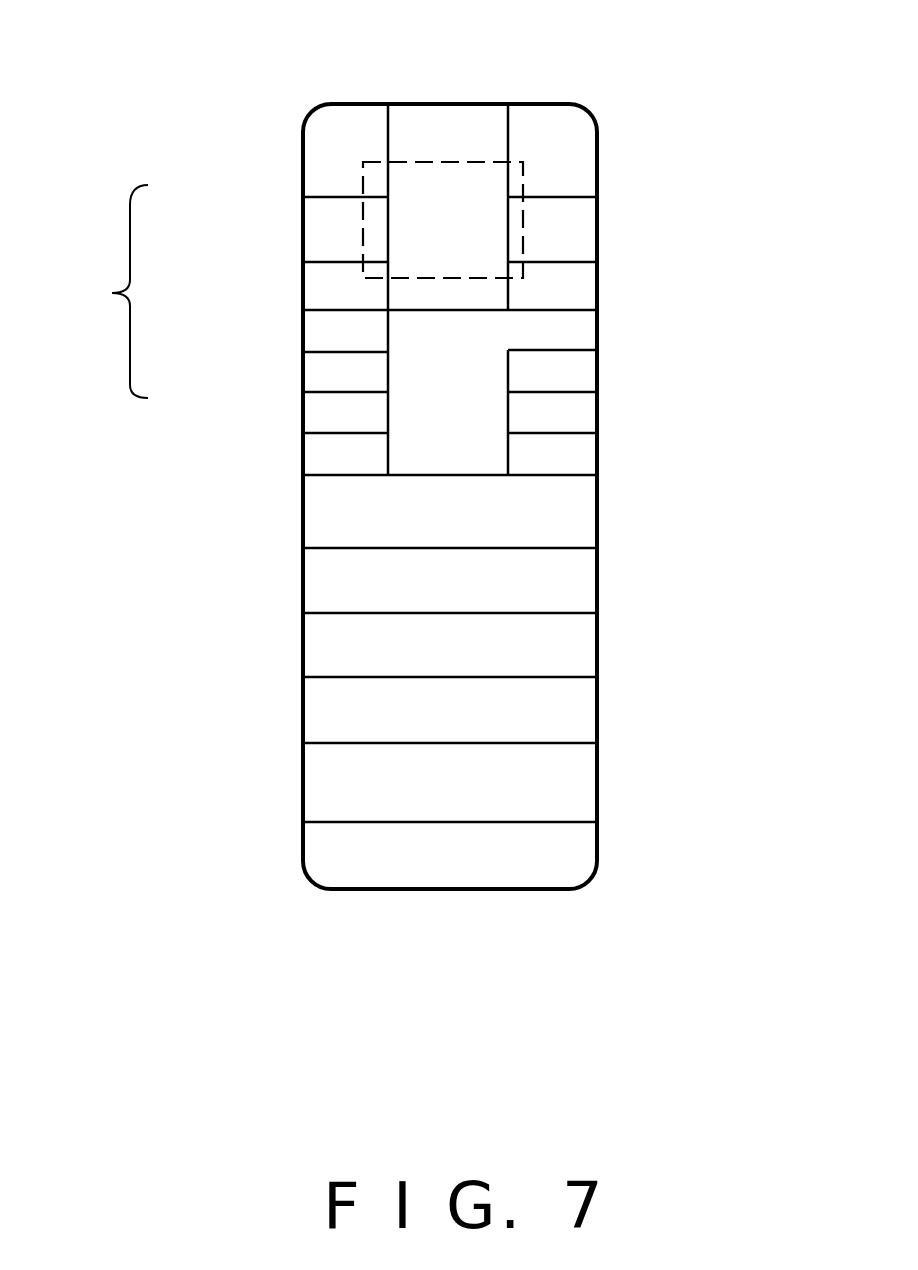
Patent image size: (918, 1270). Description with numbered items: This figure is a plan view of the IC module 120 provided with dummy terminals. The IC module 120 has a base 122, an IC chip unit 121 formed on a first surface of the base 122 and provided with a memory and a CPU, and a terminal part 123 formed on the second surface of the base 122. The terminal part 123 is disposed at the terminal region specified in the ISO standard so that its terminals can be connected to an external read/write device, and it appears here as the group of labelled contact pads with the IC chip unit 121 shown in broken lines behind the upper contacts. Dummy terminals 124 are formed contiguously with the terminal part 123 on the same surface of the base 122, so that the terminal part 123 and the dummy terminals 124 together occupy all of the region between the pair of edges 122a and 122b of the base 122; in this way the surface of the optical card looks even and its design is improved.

The IC module 120 is at (90, 291).
The IC chip unit 121 is at (363, 232).
The base 122 is at (303, 297).
The edge of the base 122a is at (453, 103).
The edge of the base 122b is at (482, 890).
The terminal part 123 is at (303, 373).
The dummy terminals 124 is at (578, 172).